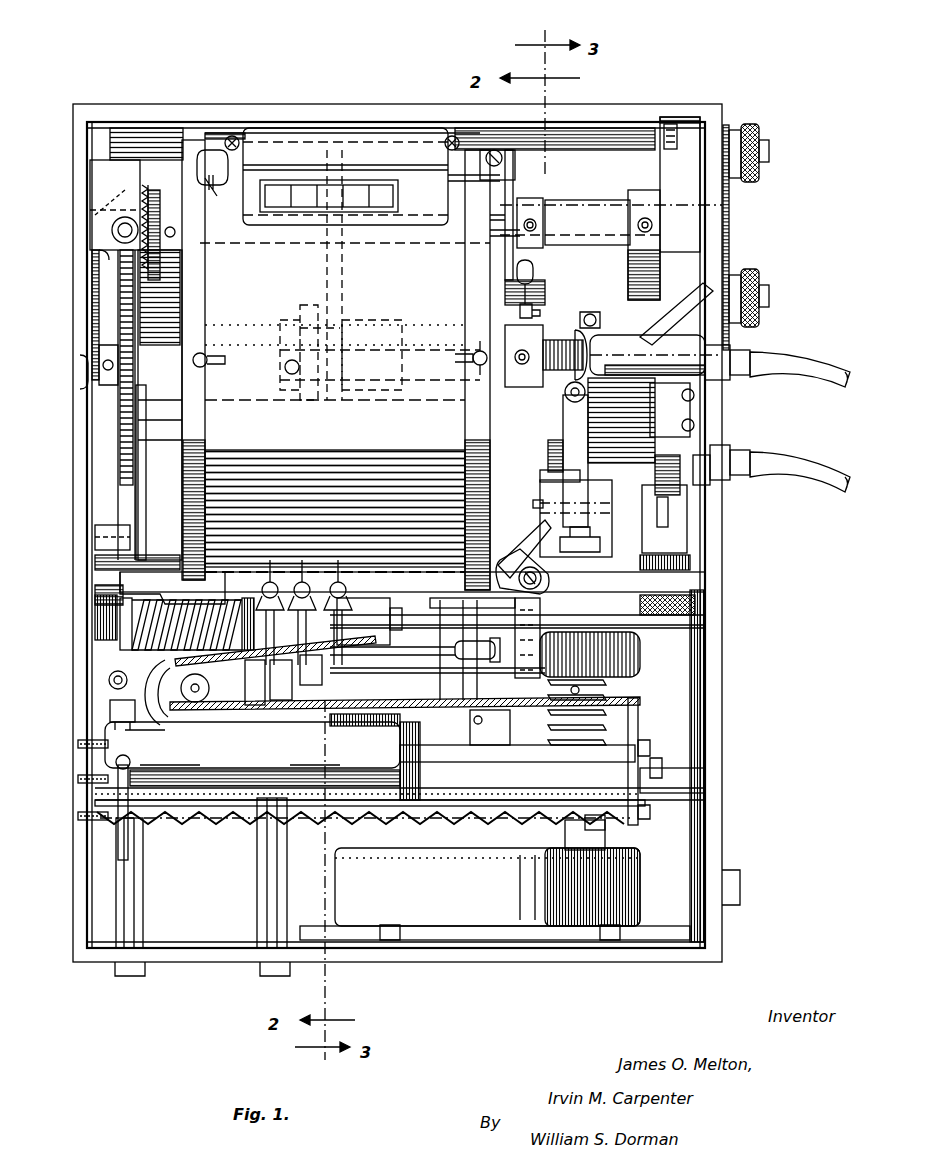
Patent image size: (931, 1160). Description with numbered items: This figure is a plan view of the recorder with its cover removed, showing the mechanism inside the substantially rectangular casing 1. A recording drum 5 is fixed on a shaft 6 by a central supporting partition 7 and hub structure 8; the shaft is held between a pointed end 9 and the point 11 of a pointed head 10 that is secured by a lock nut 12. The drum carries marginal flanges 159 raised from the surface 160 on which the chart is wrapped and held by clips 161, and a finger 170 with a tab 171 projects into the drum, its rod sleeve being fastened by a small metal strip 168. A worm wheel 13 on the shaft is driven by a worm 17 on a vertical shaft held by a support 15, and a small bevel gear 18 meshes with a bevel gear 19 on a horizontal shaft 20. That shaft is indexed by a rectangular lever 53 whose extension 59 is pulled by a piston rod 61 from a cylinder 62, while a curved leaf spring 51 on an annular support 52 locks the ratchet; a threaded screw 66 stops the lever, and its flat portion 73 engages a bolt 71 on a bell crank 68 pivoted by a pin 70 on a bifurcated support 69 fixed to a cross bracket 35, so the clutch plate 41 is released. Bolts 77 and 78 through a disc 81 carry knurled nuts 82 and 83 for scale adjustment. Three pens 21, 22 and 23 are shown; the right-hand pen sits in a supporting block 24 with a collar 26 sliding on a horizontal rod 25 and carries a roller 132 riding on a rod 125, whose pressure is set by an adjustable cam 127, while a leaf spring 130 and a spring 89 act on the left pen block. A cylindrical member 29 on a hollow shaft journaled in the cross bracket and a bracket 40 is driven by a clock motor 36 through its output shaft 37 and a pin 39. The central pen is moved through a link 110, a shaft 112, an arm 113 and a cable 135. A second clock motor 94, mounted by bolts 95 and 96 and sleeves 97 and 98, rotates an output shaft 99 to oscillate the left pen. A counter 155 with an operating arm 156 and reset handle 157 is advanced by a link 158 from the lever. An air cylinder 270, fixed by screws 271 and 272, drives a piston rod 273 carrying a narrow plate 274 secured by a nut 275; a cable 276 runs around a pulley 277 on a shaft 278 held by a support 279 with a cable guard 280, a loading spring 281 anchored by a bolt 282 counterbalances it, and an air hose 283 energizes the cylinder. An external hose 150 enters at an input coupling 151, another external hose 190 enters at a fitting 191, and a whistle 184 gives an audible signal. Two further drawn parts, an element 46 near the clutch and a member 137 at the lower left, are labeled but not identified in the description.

The casing 1 is at (383, 108).
The recording drum 5 is at (185, 135).
The shaft 6 is at (160, 355).
The supporting partition 7 is at (327, 268).
The hub structure 8 is at (393, 328).
The pointed end 9 is at (82, 355).
The pointed head 10 is at (628, 340).
The point 11 is at (730, 340).
The lock nut 12 is at (575, 333).
The worm wheel 13 is at (136, 300).
The support 15 is at (115, 205).
The worm 17 is at (140, 170).
The small bevel gear 18 is at (112, 265).
The bevel gear 19 is at (140, 195).
The horizontal shaft 20 is at (510, 220).
The left-hand pen 21 is at (270, 580).
The central pen 22 is at (305, 580).
The right-hand pen 23 is at (340, 580).
The supporting block 24 is at (380, 598).
The horizontal rod 25 is at (398, 608).
The collar 26 is at (382, 616).
The cylindrical member 29 is at (615, 628).
The cross bracket 35 is at (692, 578).
The clock motor 36 is at (485, 935).
The output shaft 37 is at (565, 832).
The pin 39 is at (600, 825).
The bracket 40 is at (695, 780).
The clutch plate 41 is at (640, 675).
The spring 46 is at (610, 694).
The curved leaf spring 51 is at (672, 122).
The annular support 52 is at (685, 115).
The rectangular lever 53 is at (595, 205).
The extension 59 is at (635, 500).
The piston rod 61 is at (680, 535).
The cylinder 62 is at (698, 735).
The threaded screw 66 is at (600, 312).
The bell crank 68 is at (565, 422).
The bifurcated support 69 is at (545, 476).
The pin 70 is at (535, 501).
The bolt 71 is at (565, 395).
The flat portion 73 is at (550, 452).
The threaded bolt 77 is at (770, 150).
The threaded bolt 78 is at (770, 296).
The disc 81 is at (730, 203).
The knurled nut 82 is at (745, 124).
The knurled nut 83 is at (752, 272).
The spring 89 is at (168, 601).
The second clock motor 94 is at (380, 815).
The bolt 95 is at (132, 978).
The bolt 96 is at (270, 977).
The sleeve 97 is at (140, 905).
The sleeve 98 is at (262, 866).
The output shaft 99 is at (250, 705).
The link 110 is at (395, 654).
The shaft 112 is at (500, 742).
The arm 113 is at (528, 716).
The rod 125 is at (400, 728).
The adjustable cam 127 is at (135, 539).
The leaf spring 130 is at (280, 700).
The roller 132 is at (364, 665).
The cable 135 is at (310, 690).
The support 137 is at (115, 735).
The external hose 150 is at (835, 385).
The input coupling 151 is at (726, 378).
The counter 155 is at (325, 130).
The operating arm 156 is at (494, 150).
The reset handle 157 is at (215, 150).
The link 158 is at (534, 296).
The marginal flanges 159 is at (205, 283).
The surface 160 is at (335, 448).
The clips 161 is at (228, 359).
The small metal strip 168 is at (545, 578).
The finger 170 is at (468, 520).
The tab 171 is at (535, 540).
The whistle 184 is at (135, 504).
The external hose 190 is at (820, 468).
The fitting 191 is at (740, 480).
The air cylinder 270 is at (215, 815).
The screw 271 is at (85, 742).
The screw 272 is at (95, 782).
The piston rod 273 is at (456, 745).
The narrow plate 274 is at (630, 785).
The nut 275 is at (662, 760).
The cable 276 is at (640, 722).
The pulley 277 is at (195, 704).
The shaft 278 is at (165, 705).
The support 279 is at (108, 683).
The cable guard 280 is at (130, 655).
The loading spring 281 is at (180, 820).
The bolt 282 is at (90, 822).
The air hose 283 is at (128, 855).